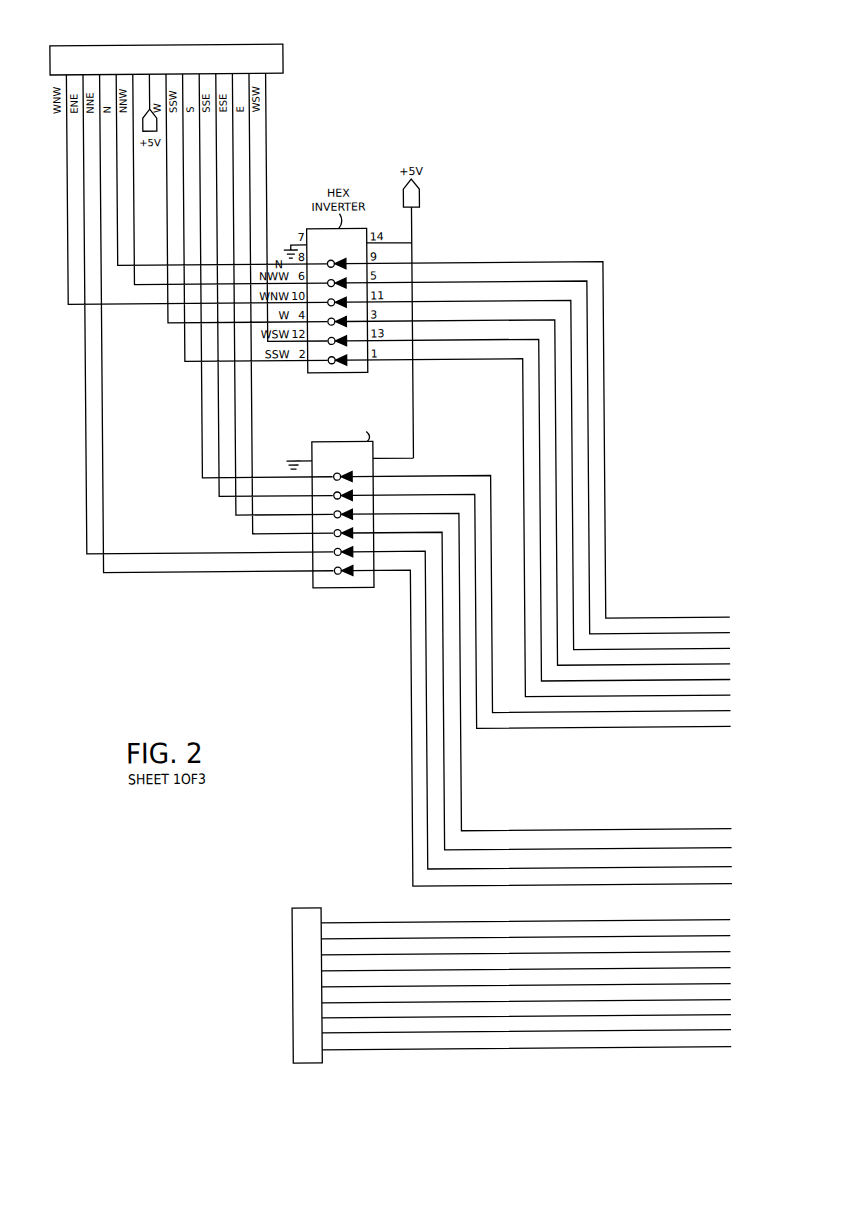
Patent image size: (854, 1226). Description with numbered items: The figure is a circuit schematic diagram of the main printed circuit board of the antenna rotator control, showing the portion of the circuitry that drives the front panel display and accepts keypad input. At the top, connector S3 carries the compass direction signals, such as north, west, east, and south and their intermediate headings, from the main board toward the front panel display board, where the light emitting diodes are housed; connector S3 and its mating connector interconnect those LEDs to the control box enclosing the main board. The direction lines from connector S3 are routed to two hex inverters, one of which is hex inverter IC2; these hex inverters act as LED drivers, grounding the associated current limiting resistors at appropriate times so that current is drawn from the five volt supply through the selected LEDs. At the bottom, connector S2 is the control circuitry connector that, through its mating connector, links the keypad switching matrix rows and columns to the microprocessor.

The connector S3 is at (178, 45).
The control circuitry connector S2 is at (288, 986).
The hex inverter IC2 is at (327, 497).